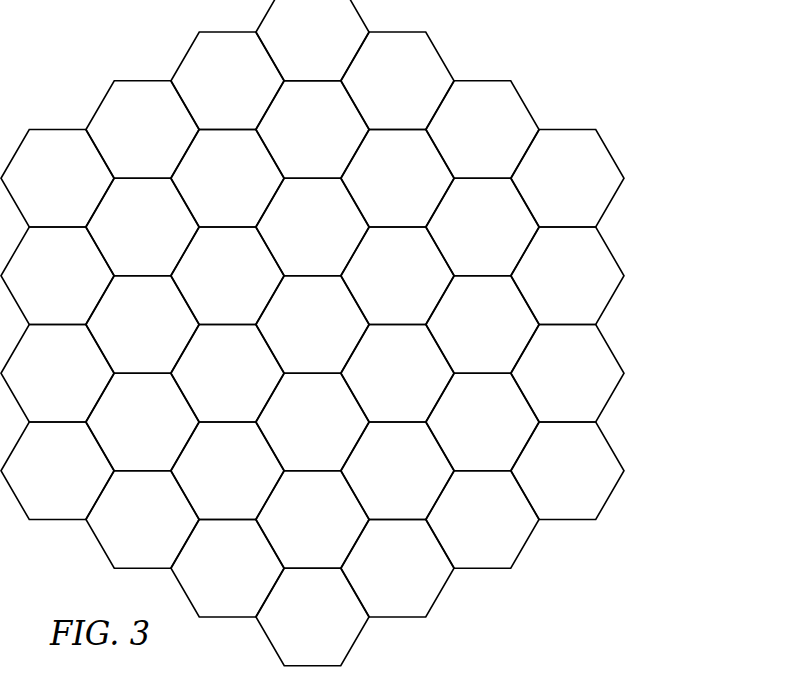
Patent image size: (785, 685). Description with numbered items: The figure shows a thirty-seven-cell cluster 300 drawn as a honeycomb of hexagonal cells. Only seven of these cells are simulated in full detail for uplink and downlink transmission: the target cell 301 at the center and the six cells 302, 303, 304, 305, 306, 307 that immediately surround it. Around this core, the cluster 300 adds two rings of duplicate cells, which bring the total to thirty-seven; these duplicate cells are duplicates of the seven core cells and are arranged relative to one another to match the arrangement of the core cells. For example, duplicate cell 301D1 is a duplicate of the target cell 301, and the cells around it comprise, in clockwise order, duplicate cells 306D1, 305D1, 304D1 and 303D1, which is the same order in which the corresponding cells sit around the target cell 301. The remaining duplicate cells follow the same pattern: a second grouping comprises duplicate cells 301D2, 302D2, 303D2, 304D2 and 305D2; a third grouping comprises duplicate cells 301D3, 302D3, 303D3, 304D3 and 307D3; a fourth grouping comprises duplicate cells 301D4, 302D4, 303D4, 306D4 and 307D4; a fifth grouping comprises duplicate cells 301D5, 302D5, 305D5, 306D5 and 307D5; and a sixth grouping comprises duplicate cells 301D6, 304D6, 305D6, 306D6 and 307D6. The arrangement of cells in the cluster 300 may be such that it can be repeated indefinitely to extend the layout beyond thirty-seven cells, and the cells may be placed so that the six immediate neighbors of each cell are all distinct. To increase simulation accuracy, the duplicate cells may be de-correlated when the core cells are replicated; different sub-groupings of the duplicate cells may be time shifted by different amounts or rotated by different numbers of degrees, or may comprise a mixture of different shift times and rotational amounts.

The cluster 300 is at (664, 189).
The target cell 301 is at (312, 325).
The cell 302 is at (227, 276).
The cell 303 is at (227, 374).
The cell 304 is at (312, 422).
The cell 305 is at (397, 374).
The cell 306 is at (397, 276).
The cell 307 is at (312, 227).
The duplicate cell 301D1 is at (142, 130).
The duplicate cell 303D1 is at (57, 179).
The duplicate cell 304D1 is at (142, 227).
The duplicate cell 305D1 is at (227, 179).
The duplicate cell 306D1 is at (227, 81).
The duplicate cell 301D2 is at (397, 81).
The duplicate cell 302D2 is at (312, 40).
The duplicate cell 303D2 is at (312, 130).
The duplicate cell 304D2 is at (397, 179).
The duplicate cell 305D2 is at (482, 130).
The duplicate cell 301D3 is at (567, 276).
The duplicate cell 302D3 is at (482, 227).
The duplicate cell 303D3 is at (482, 325).
The duplicate cell 304D3 is at (567, 374).
The duplicate cell 307D3 is at (567, 179).
The duplicate cell 301D4 is at (482, 520).
The duplicate cell 302D4 is at (397, 471).
The duplicate cell 303D4 is at (397, 569).
The duplicate cell 306D4 is at (567, 471).
The duplicate cell 307D4 is at (482, 422).
The duplicate cell 301D5 is at (227, 569).
The duplicate cell 302D5 is at (142, 520).
The duplicate cell 305D5 is at (312, 617).
The duplicate cell 306D5 is at (312, 520).
The duplicate cell 307D5 is at (227, 471).
The duplicate cell 301D6 is at (57, 374).
The duplicate cell 304D6 is at (57, 471).
The duplicate cell 305D6 is at (142, 422).
The duplicate cell 306D6 is at (142, 325).
The duplicate cell 307D6 is at (57, 276).